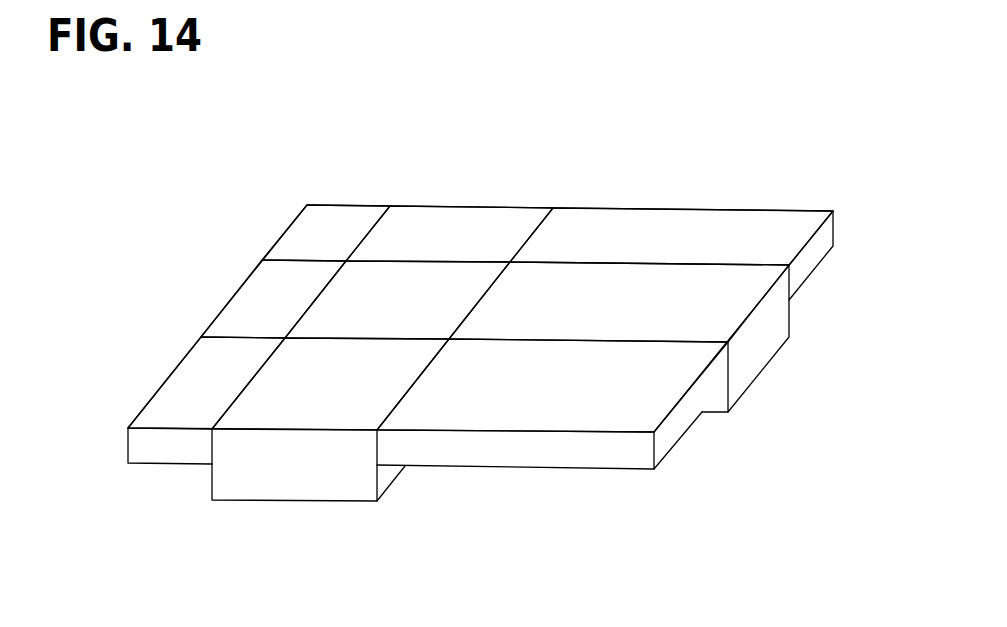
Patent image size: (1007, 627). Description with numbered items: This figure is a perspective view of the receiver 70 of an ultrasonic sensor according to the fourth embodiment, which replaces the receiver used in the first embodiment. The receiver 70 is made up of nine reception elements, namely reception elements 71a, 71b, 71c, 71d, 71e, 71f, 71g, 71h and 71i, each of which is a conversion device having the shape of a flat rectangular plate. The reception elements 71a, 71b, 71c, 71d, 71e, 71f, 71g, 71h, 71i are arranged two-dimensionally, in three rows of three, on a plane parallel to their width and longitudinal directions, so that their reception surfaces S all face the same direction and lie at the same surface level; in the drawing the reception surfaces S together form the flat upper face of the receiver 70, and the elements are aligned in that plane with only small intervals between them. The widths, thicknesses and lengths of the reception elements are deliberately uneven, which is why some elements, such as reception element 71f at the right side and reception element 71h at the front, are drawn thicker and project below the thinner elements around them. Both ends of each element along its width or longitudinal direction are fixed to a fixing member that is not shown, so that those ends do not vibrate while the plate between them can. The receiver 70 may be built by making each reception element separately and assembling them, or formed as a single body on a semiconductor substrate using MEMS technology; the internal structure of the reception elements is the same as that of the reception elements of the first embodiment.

The receiver 70 is at (655, 58).
The reception surface S is at (780, 225).
The reception element 71a is at (338, 205).
The reception element 71b is at (467, 206).
The reception element 71c is at (678, 208).
The reception element 71d is at (250, 298).
The reception element 71e is at (465, 282).
The reception element 71f is at (763, 348).
The reception element 71g is at (173, 448).
The reception element 71h is at (293, 477).
The reception element 71i is at (515, 452).